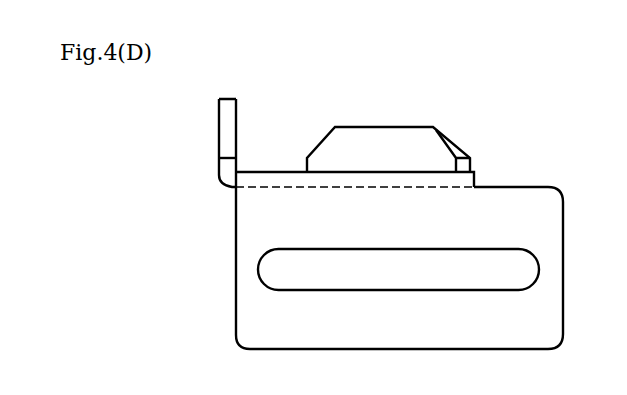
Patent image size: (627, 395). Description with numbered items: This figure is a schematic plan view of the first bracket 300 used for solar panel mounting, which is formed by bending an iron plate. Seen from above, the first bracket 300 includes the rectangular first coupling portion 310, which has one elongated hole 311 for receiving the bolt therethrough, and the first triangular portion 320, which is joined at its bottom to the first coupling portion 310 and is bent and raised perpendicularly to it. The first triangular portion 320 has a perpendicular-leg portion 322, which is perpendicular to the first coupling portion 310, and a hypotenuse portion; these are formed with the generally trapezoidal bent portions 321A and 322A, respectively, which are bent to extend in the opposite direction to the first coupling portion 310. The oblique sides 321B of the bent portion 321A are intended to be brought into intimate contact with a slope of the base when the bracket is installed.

The first bracket 300 is at (369, 217).
The first coupling portion 310 is at (253, 318).
The elongated hole 311 is at (272, 269).
The first triangular portion 320 is at (266, 182).
The bent portion 321A is at (377, 147).
The oblique side 321B is at (322, 140).
The perpendicular-leg portion 322 is at (193, 143).
The bent portion 322A is at (229, 131).